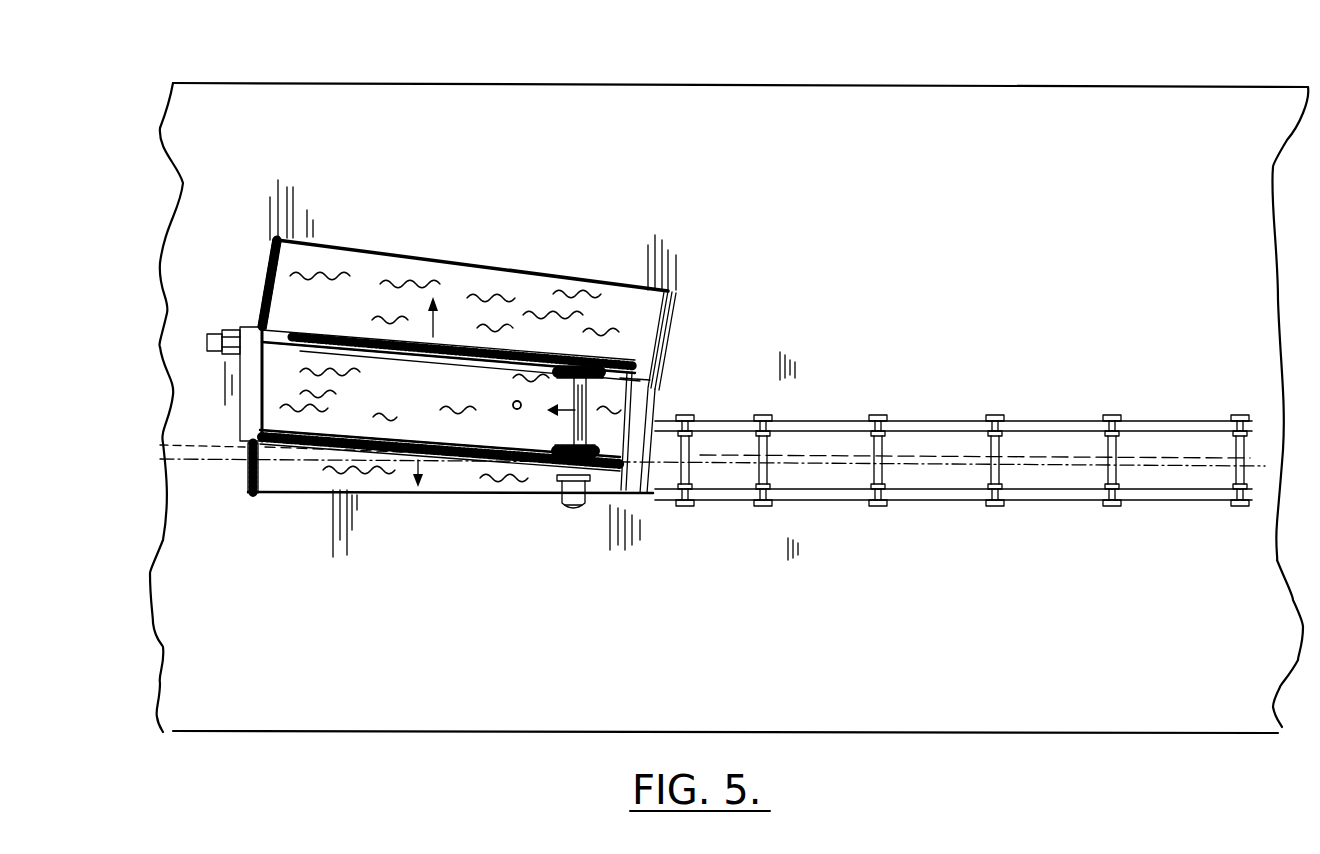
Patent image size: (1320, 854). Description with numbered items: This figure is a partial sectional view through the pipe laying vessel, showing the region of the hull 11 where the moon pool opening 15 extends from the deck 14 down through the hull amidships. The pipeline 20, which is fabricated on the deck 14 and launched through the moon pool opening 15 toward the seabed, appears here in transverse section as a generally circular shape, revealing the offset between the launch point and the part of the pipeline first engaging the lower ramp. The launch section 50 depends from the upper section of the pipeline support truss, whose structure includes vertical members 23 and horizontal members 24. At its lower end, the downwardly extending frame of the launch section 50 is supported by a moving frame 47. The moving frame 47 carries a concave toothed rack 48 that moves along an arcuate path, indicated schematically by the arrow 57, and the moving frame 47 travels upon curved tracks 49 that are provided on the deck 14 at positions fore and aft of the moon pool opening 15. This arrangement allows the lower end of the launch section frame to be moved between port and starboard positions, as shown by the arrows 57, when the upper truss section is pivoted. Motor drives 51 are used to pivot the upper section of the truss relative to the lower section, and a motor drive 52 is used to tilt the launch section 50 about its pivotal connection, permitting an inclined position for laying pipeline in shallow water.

The hull 11 is at (1042, 87).
The deck 14 is at (245, 141).
The moon pool opening 15 is at (526, 297).
The pipeline 20 is at (514, 402).
The vertical members 23 is at (770, 507).
The horizontal members 24 is at (946, 424).
The moving frame 47 is at (242, 366).
The concave toothed rack 48 is at (408, 399).
The curved tracks 49 is at (275, 289).
The launch section 50 is at (572, 385).
The motor drives 51 is at (208, 341).
The motor drive 52 is at (563, 494).
The arrow 57 is at (447, 325).